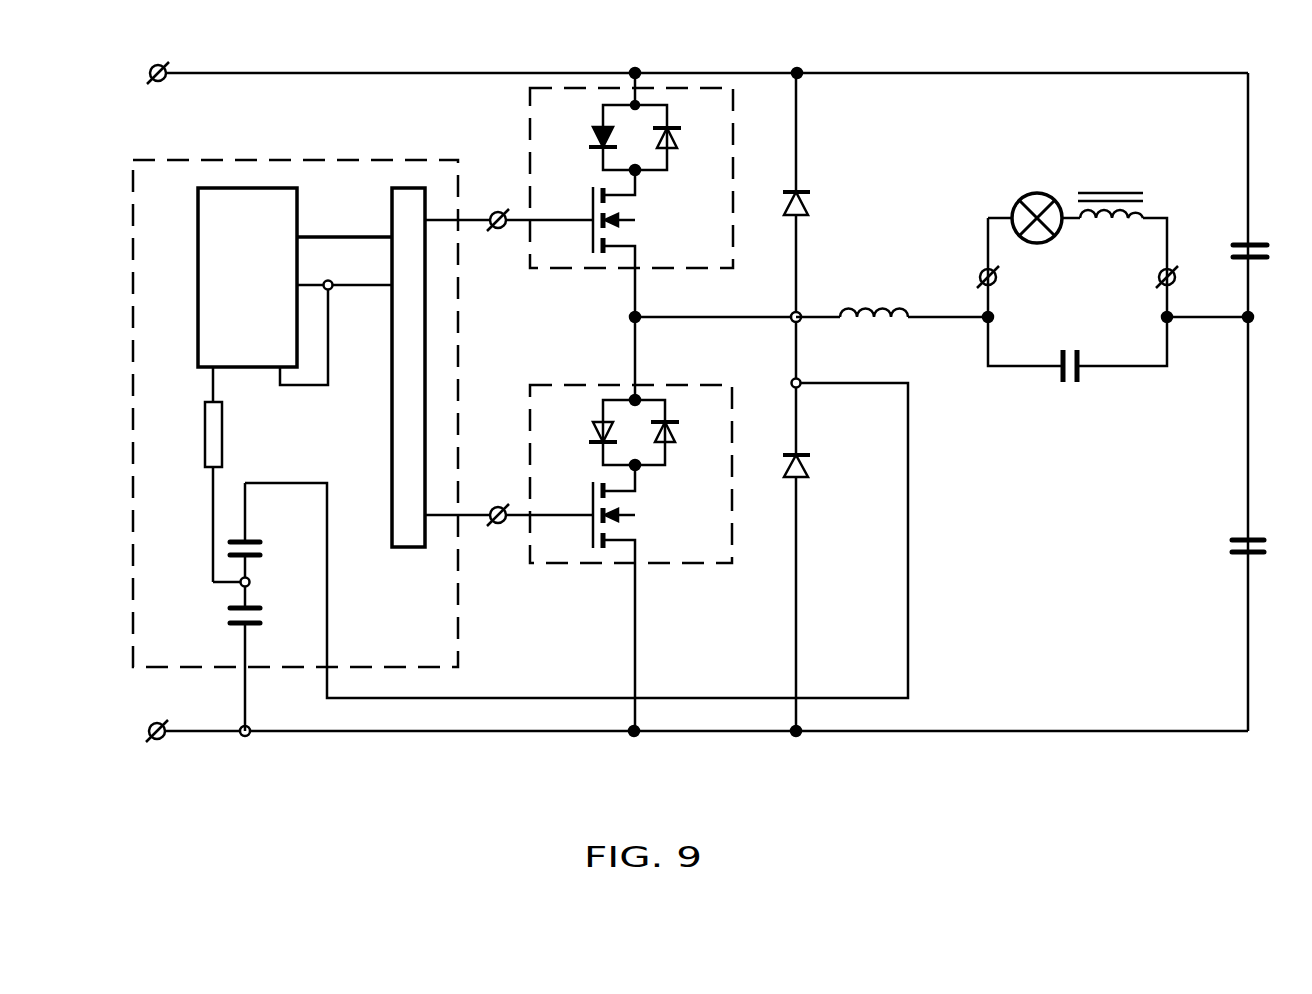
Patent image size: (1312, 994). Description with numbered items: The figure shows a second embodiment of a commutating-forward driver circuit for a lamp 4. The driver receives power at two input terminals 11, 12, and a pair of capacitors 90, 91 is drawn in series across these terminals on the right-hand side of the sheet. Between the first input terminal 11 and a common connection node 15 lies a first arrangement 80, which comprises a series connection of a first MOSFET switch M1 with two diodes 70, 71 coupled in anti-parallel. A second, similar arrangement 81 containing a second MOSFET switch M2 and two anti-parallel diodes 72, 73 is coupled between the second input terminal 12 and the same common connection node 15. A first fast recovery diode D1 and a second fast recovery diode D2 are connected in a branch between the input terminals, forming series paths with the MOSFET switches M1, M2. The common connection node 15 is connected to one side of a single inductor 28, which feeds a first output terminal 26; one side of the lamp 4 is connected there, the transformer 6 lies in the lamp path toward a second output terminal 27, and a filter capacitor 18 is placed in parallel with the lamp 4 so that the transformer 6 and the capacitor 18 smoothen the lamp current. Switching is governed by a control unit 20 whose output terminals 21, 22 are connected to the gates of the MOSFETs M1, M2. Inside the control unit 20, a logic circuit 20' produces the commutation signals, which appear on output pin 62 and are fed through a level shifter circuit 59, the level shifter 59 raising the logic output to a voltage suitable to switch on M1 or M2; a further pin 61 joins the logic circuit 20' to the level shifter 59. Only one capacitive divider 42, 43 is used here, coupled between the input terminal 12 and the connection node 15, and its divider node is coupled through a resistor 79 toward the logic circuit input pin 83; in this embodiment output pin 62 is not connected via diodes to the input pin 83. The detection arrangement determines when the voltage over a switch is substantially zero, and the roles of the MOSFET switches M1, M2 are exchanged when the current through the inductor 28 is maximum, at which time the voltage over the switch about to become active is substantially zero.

The first input terminal 11 is at (157, 62).
The second input terminal 12 is at (157, 744).
The control unit 20 is at (295, 376).
The logic circuit 20' is at (221, 277).
The level shifter circuit 59 is at (407, 549).
The output pin 61 is at (352, 236).
The output pin 62 is at (348, 290).
The input pin 83 is at (212, 388).
The resistor 79 is at (208, 445).
The capacitor of capacitive divider 43 is at (230, 546).
The capacitor of capacitive divider 42 is at (230, 608).
The output terminal of control unit 21 is at (495, 210).
The output terminal of control unit 22 is at (498, 530).
The first arrangement 80 is at (683, 88).
The second arrangement 81 is at (672, 565).
The diode 70 is at (592, 136).
The diode 71 is at (678, 139).
The diode 72 is at (592, 431).
The diode 73 is at (676, 431).
The first MOSFET switch M1 is at (590, 205).
The second MOSFET switch M2 is at (590, 497).
The first fast recovery diode D1 is at (812, 470).
The second fast recovery diode D2 is at (812, 208).
The connection node 15 is at (801, 316).
The inductor 28 is at (900, 309).
The lamp 4 is at (1040, 194).
The transformer 6 is at (1094, 222).
The first output terminal 26 is at (998, 280).
The second output terminal 27 is at (1160, 270).
The filter capacitor 18 is at (1077, 384).
The capacitor 90 is at (1258, 243).
The capacitor 91 is at (1255, 538).